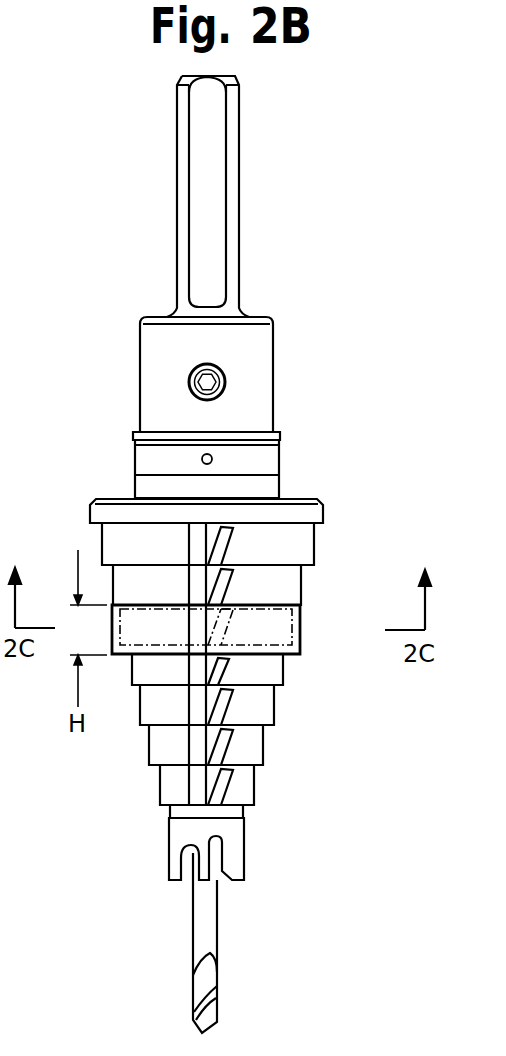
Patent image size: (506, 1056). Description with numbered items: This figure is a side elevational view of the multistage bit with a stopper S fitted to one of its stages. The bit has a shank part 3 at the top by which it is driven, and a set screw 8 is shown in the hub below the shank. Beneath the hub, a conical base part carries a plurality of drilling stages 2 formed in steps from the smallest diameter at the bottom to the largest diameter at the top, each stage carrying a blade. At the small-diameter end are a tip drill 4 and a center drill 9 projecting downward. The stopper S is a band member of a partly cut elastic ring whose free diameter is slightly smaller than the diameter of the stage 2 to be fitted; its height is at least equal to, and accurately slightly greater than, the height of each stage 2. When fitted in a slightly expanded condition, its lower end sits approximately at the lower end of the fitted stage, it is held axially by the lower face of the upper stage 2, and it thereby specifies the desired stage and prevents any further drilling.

The shank part 3 is at (240, 200).
The set screw 8 is at (210, 382).
The drilling stages 2 is at (288, 588).
The stopper S is at (300, 628).
The tip drill 4 is at (233, 854).
The center drill 9 is at (208, 925).